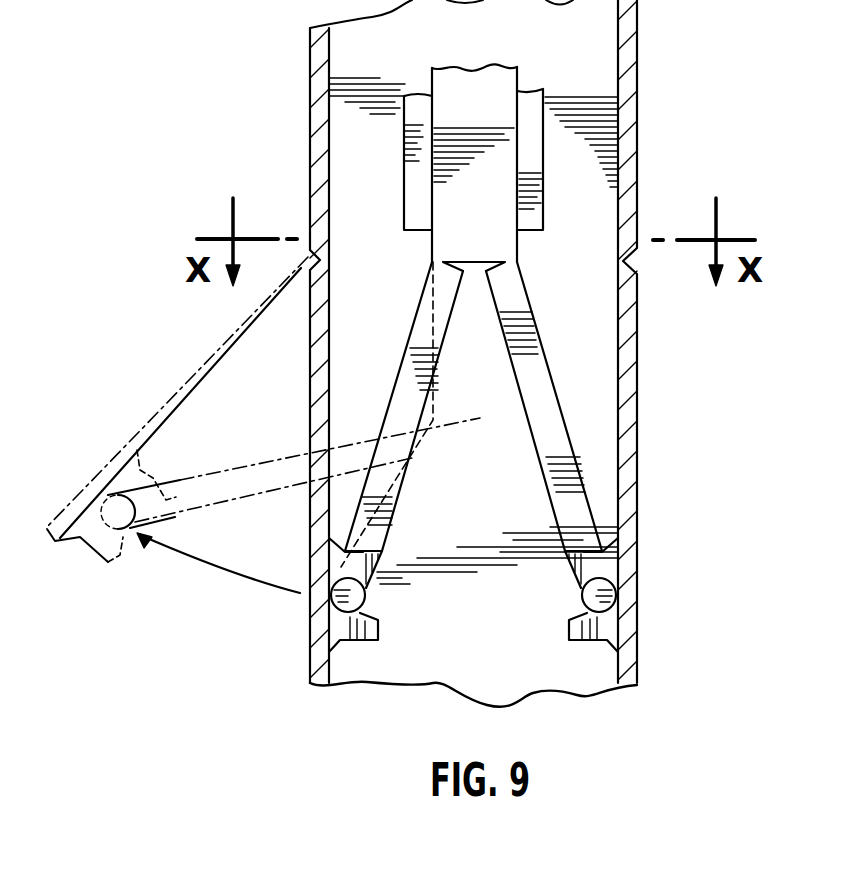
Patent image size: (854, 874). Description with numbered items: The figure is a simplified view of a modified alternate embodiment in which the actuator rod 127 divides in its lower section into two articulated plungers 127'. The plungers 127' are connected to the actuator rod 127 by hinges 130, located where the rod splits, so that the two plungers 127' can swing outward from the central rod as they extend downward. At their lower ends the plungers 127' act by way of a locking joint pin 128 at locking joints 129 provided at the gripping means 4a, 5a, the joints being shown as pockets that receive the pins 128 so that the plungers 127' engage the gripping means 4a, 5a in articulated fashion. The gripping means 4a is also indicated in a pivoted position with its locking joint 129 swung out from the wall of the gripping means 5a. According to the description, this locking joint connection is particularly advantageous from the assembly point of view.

The actuator rod 127 is at (496, 148).
The articulated plungers 127' is at (476, 425).
The locking joint pin 128 is at (357, 597).
The locking joints 129 is at (579, 645).
The hinges 130 is at (433, 262).
The gripping means 4a is at (310, 400).
The gripping means 5a is at (637, 437).